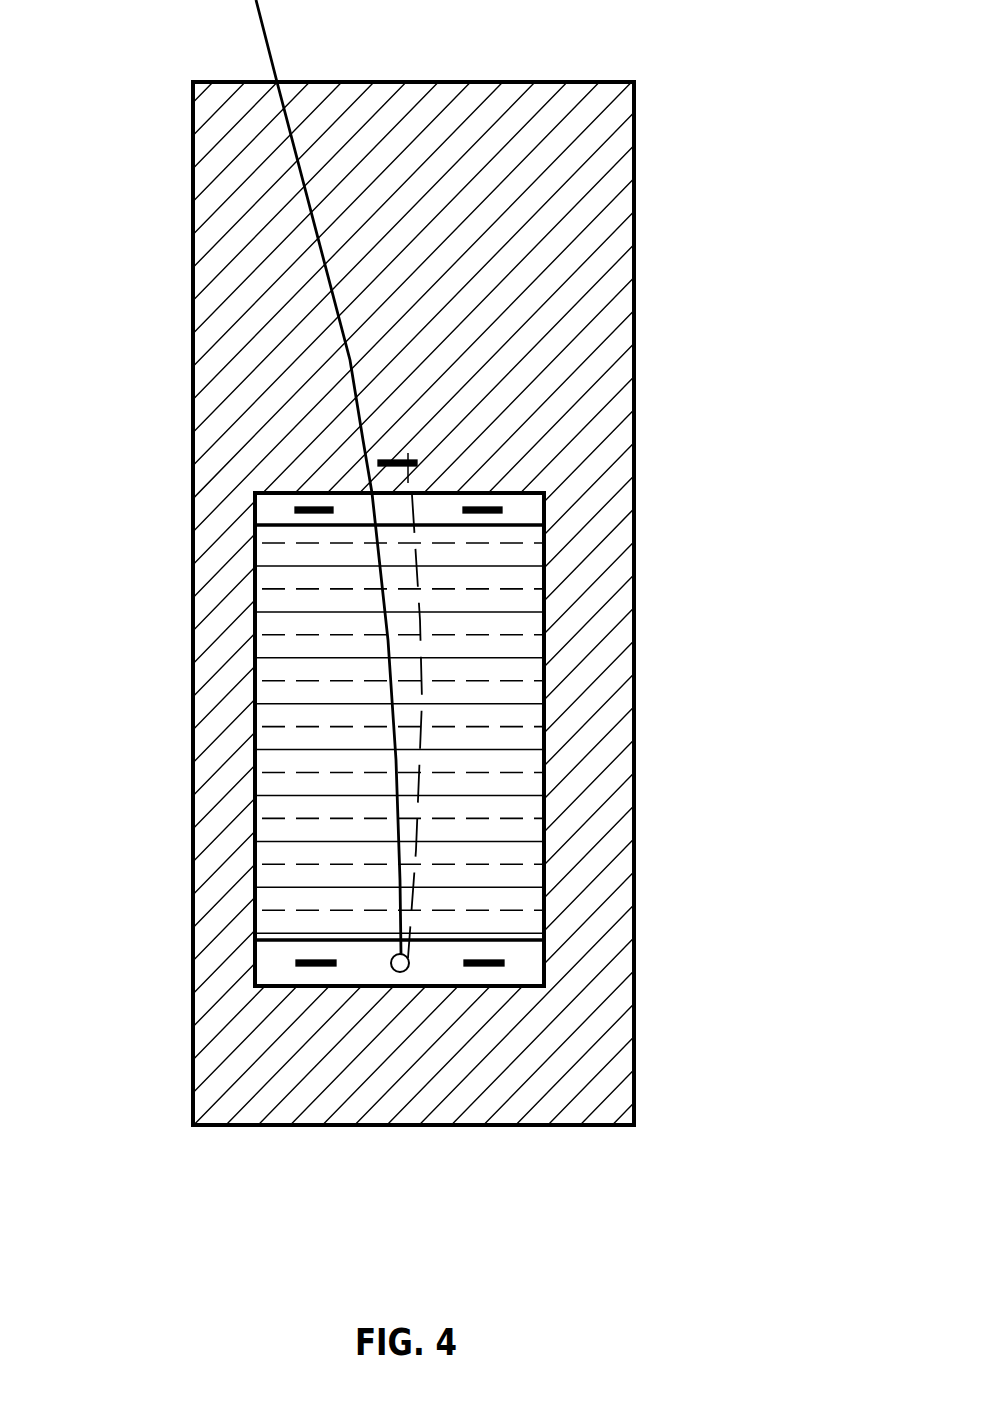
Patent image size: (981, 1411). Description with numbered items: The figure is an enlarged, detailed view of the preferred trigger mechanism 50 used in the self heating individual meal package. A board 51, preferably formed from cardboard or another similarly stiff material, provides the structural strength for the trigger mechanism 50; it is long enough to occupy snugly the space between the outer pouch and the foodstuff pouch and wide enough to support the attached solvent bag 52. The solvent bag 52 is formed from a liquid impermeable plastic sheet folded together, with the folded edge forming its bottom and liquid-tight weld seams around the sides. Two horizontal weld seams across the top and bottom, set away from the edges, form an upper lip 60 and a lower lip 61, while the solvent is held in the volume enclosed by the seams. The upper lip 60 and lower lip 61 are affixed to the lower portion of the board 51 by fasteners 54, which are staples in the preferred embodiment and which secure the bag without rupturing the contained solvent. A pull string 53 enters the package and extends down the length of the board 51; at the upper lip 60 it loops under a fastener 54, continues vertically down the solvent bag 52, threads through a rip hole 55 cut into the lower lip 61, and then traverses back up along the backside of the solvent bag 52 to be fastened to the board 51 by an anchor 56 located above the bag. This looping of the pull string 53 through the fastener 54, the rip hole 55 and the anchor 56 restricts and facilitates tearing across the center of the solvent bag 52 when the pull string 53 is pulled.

The trigger mechanism 50 is at (341, 603).
The board 51 is at (490, 602).
The solvent bag 52 is at (521, 739).
The pull string 53 is at (224, 477).
The fasteners 54 is at (542, 688).
The rip hole 55 is at (448, 1095).
The anchor 56 is at (586, 299).
The upper lip 60 is at (601, 616).
The lower lip 61 is at (378, 1088).